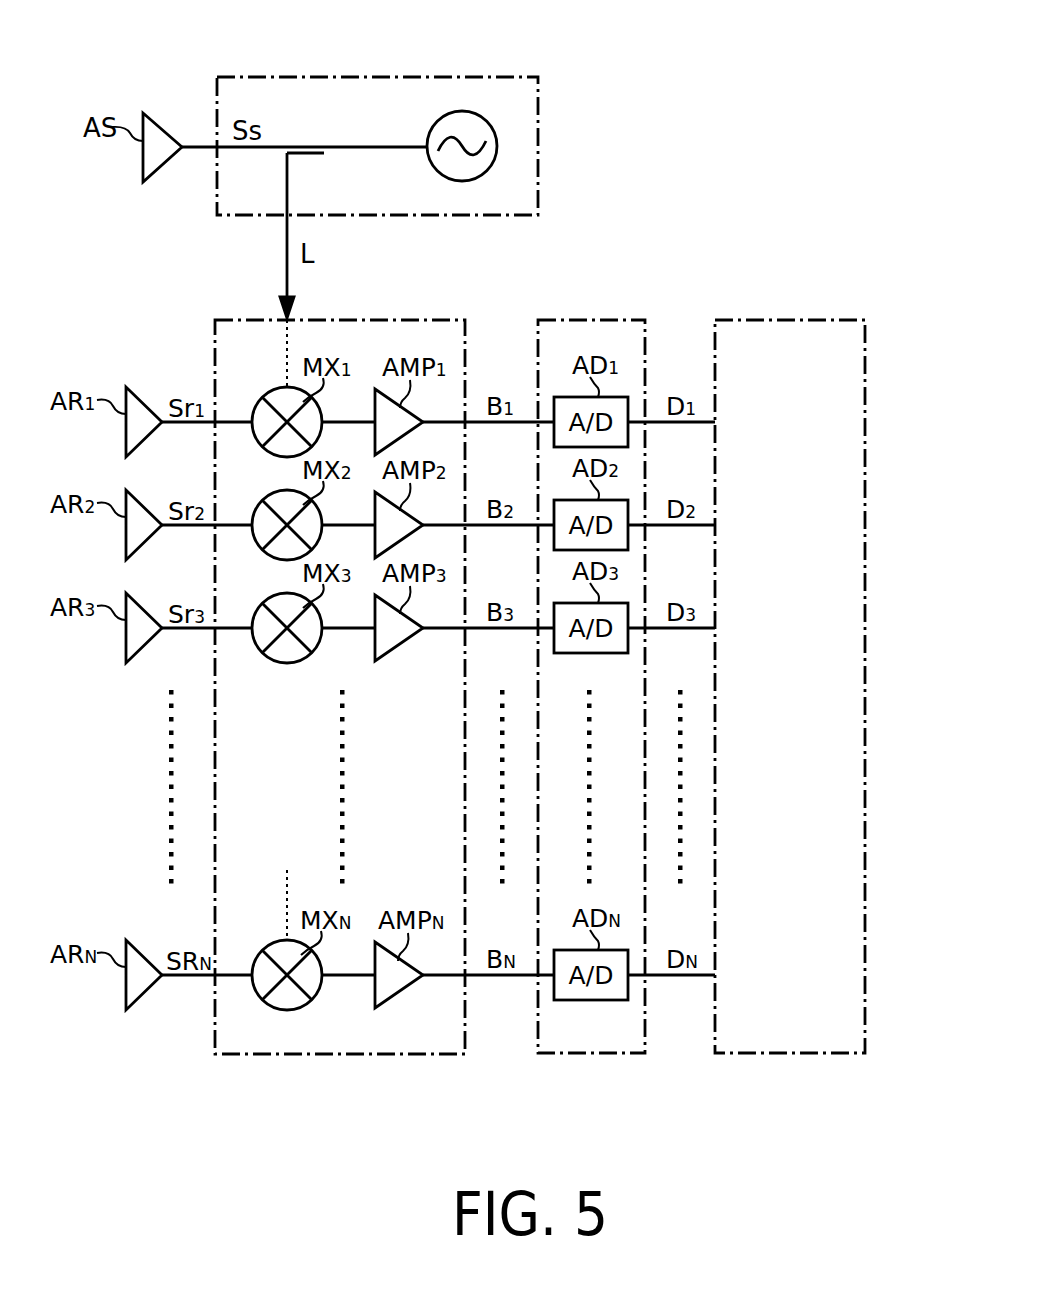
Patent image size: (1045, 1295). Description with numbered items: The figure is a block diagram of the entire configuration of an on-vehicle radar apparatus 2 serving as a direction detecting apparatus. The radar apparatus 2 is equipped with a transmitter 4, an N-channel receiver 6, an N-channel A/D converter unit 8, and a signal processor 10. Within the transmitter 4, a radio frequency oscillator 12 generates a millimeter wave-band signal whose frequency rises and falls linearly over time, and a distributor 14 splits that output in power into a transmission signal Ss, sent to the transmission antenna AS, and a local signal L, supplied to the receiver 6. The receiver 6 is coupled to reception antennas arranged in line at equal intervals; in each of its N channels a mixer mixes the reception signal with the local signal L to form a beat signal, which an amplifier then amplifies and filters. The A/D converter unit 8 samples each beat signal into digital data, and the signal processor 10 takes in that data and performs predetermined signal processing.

The radar apparatus 2 is at (771, 86).
The transmitter 4 is at (511, 77).
The N-channel receiver 6 is at (422, 319).
The N-channel A/D converter unit 8 is at (608, 319).
The signal processor 10 is at (815, 319).
The radio frequency oscillator 12 is at (492, 167).
The distributor 14 is at (321, 156).